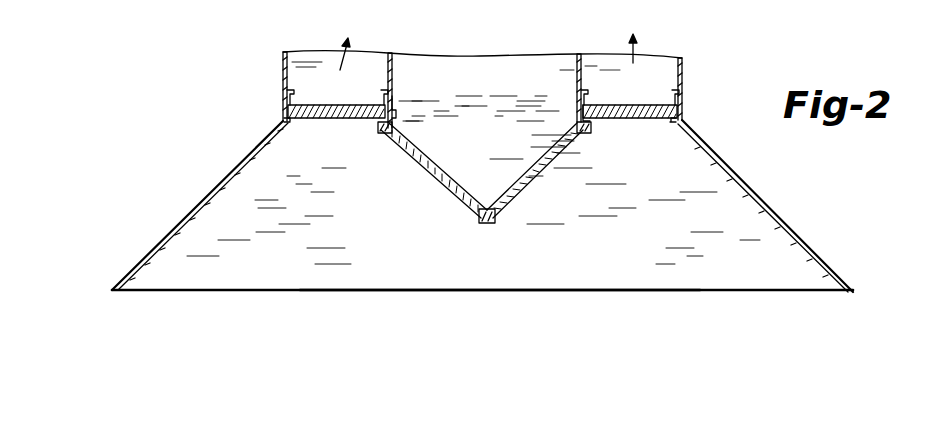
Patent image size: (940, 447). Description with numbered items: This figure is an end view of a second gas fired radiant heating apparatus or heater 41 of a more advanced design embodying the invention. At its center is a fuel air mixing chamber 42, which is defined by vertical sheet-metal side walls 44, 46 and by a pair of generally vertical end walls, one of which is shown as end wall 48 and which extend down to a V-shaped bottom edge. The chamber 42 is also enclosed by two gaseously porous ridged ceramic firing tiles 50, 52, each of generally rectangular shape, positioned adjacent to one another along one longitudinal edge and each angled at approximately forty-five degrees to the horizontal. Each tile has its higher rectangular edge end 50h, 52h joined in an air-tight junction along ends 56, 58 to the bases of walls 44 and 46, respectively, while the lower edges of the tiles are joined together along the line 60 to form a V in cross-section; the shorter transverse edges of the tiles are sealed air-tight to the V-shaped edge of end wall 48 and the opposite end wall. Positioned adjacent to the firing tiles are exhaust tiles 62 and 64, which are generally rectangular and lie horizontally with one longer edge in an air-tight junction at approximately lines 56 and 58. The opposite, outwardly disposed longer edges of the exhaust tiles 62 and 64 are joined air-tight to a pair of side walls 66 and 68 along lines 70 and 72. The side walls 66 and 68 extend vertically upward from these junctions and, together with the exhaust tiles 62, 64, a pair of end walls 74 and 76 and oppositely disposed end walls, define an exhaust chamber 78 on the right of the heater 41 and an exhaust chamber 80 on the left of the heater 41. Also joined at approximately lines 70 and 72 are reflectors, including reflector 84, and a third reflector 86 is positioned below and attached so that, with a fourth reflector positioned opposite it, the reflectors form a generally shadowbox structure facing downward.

The radiant heater 41 is at (517, 295).
The fuel air mixing chamber 42 is at (489, 153).
The vertical side wall 44 is at (393, 96).
The vertical side wall 46 is at (575, 76).
The end wall 48 is at (485, 72).
The ceramic firing tile 50 is at (424, 167).
The higher rectangular edge end of tile 50h is at (383, 133).
The ceramic firing tile 52 is at (534, 168).
The higher rectangular edge end of tile 52h is at (590, 133).
The junction line 56 is at (398, 113).
The junction line 58 is at (583, 110).
The junction line of tile lower edges 60 is at (486, 222).
The exhaust tile 62 is at (328, 116).
The exhaust tile 64 is at (645, 120).
The side wall 66 is at (683, 80).
The side wall 68 is at (282, 73).
The junction line 70 is at (285, 108).
The junction line 72 is at (684, 112).
The end wall 74 is at (362, 52).
The end wall 76 is at (657, 54).
The exhaust chamber 78 is at (621, 80).
The exhaust chamber 80 is at (203, 200).
The reflector 84 is at (741, 180).
The third reflector 86 is at (441, 274).